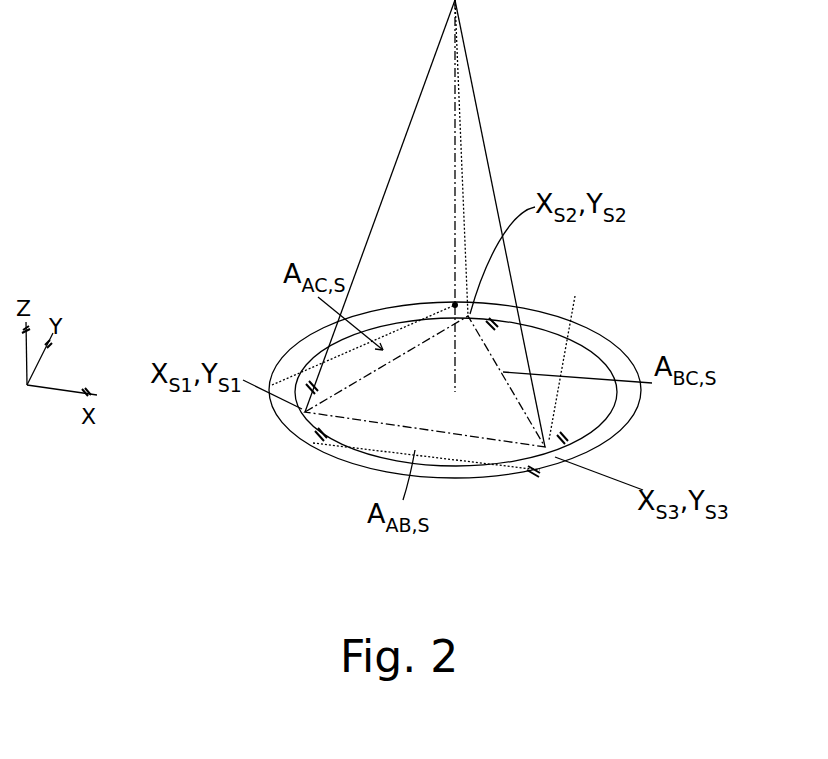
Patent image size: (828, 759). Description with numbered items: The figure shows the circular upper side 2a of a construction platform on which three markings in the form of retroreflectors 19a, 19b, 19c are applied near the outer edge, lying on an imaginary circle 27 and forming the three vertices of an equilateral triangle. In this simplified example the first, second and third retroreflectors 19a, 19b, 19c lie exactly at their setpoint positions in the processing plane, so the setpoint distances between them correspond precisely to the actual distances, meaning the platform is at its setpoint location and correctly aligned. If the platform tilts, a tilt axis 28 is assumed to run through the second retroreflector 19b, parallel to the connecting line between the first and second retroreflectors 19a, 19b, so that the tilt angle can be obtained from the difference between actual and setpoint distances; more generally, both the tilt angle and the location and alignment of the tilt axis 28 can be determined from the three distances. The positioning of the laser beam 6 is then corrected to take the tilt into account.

The laser beam 6 is at (393, 167).
The circular upper side 2a is at (585, 353).
The circle 27 is at (546, 330).
The first retroreflector 19a is at (304, 418).
The second retroreflector 19b is at (549, 451).
The third retroreflector 19c is at (455, 302).
The tilt axis 28 is at (560, 411).